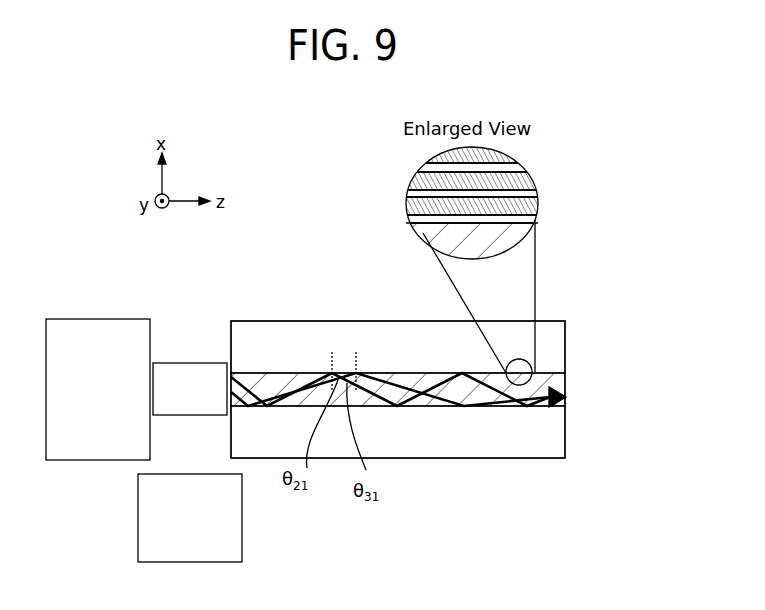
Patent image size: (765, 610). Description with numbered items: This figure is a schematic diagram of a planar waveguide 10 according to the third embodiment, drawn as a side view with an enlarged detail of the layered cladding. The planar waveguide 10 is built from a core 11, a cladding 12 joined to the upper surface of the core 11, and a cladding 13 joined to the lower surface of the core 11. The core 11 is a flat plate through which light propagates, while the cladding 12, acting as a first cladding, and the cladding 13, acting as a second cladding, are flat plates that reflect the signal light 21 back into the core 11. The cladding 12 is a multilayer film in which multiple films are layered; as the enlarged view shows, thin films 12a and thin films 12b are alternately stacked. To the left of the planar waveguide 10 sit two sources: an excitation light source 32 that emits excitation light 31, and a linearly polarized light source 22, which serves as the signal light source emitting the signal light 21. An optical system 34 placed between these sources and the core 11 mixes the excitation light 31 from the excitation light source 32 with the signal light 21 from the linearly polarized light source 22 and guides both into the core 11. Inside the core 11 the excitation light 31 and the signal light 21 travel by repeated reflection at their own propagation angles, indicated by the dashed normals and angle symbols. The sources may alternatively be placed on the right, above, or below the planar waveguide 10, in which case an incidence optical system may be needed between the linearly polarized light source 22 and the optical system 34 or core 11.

The planar waveguide 10 is at (300, 320).
The core 11 is at (557, 383).
The cladding 12 is at (557, 350).
The thin films 12a is at (514, 168).
The thin films 12b is at (434, 153).
The cladding 13 is at (555, 437).
The signal light 21 is at (245, 405).
The linearly polarized light source 22 is at (138, 510).
The excitation light 31 is at (233, 377).
The excitation light source 32 is at (92, 319).
The optical system 34 is at (190, 362).